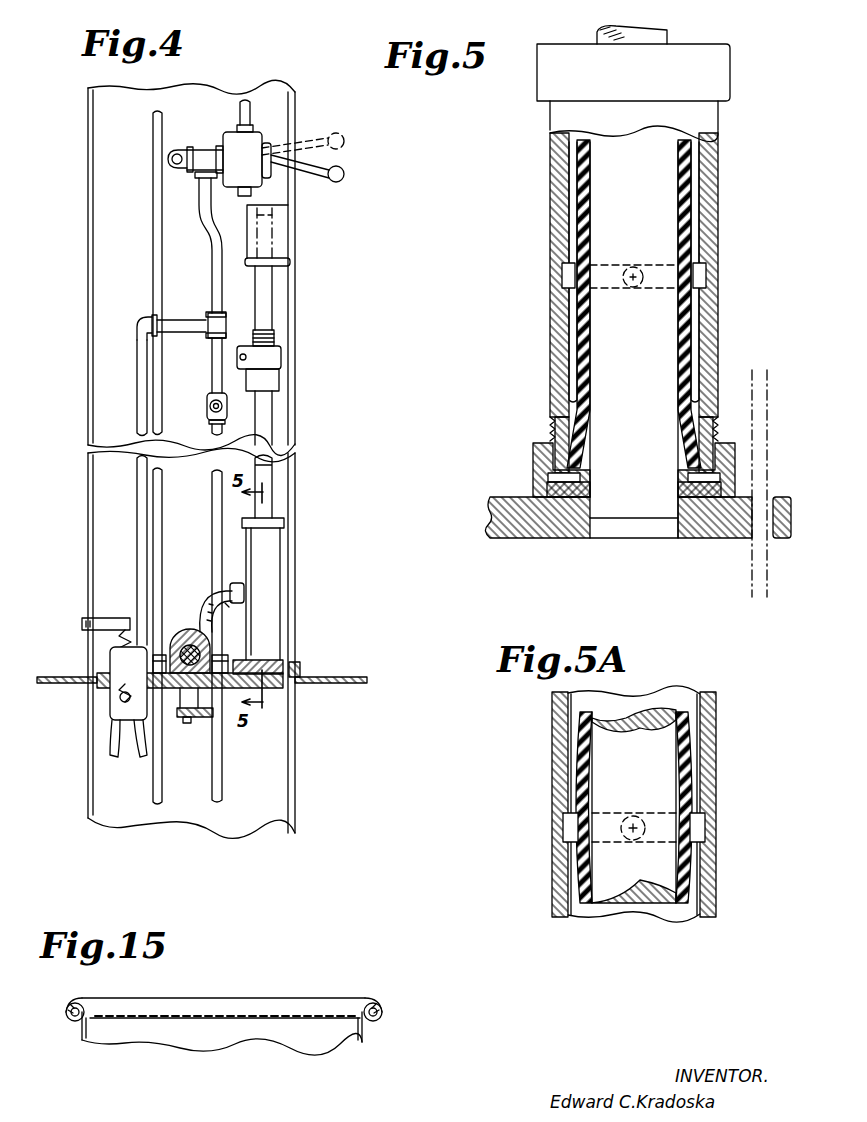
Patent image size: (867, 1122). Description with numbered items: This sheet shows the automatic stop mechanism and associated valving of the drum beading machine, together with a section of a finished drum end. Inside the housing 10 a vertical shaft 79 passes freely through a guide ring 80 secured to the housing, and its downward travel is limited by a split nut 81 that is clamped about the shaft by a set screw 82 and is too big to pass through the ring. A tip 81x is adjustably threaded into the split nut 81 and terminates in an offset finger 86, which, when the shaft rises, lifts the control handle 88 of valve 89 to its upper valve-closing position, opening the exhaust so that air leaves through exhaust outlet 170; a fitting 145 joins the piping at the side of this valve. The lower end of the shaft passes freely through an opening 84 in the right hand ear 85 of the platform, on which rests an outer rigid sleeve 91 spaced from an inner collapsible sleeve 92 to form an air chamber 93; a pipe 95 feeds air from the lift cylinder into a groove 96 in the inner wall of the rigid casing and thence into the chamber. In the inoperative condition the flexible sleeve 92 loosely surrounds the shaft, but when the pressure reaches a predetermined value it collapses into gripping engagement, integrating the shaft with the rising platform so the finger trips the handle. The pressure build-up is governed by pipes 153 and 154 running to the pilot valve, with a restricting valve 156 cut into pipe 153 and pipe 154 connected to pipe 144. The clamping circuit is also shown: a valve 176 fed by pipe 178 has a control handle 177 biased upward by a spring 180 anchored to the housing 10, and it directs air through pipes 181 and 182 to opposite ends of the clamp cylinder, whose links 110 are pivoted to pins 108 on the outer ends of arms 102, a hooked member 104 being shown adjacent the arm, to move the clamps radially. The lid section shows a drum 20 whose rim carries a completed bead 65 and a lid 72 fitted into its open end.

In FIG. 4, the housing 10 is at (113, 250).
In FIG. 5, the housing 10 is at (762, 418).
In FIG. 4, the pipe 144 is at (252, 116).
In FIG. 4, the pipe fitting 145 is at (223, 149).
In FIG. 4, the valve 89 is at (247, 160).
In FIG. 4, the control handle 88 is at (318, 140).
In FIG. 4, the exhaust outlet 170 is at (239, 190).
In FIG. 4, the offset finger 86 is at (288, 243).
In FIG. 4, the tip 81x is at (265, 298).
In FIG. 4, the set screw 82 is at (240, 357).
In FIG. 4, the split nut 81 is at (266, 357).
In FIG. 4, the guide ring 80 is at (268, 385).
In FIG. 4, the vertical shaft 79 is at (263, 413).
In FIG. 5, the vertical shaft 79 is at (667, 38).
In FIG. 5A, the vertical shaft 79 is at (634, 805).
In FIG. 4, the pipe 178 is at (142, 414).
In FIG. 4, the restricting valve 156 is at (207, 412).
In FIG. 4, the pipe 153 is at (211, 431).
In FIG. 4, the pipe 154 is at (155, 530).
In FIG. 4, the hook arm 104 is at (191, 628).
In FIG. 4, the arm 102 is at (174, 641).
In FIG. 4, the pipe 95 is at (228, 608).
In FIG. 5, the pipe 95 is at (633, 264).
In FIG. 5A, the pipe 95 is at (633, 816).
In FIG. 4, the spring 180 is at (122, 638).
In FIG. 4, the control handle 177 is at (120, 697).
In FIG. 4, the valve 176 is at (115, 705).
In FIG. 4, the pipe 181 is at (115, 740).
In FIG. 4, the pipe 182 is at (138, 757).
In FIG. 4, the pin 108 is at (182, 706).
In FIG. 4, the link 110 is at (199, 722).
In FIG. 5, the groove 96 is at (562, 277).
In FIG. 5A, the groove 96 is at (563, 829).
In FIG. 5, the outer rigid sleeve 91 is at (557, 313).
In FIG. 5A, the outer rigid sleeve 91 is at (558, 770).
In FIG. 5, the air chamber 93 is at (572, 347).
In FIG. 5A, the air chamber 93 is at (570, 792).
In FIG. 5, the inner collapsible sleeve 92 is at (578, 370).
In FIG. 5A, the inner collapsible sleeve 92 is at (580, 856).
In FIG. 5, the right hand ear 85 is at (524, 528).
In FIG. 5, the opening 84 is at (651, 530).
In FIG. 15, the lid 72 is at (215, 998).
In FIG. 15, the bead 65 is at (67, 1018).
In FIG. 15, the drum 20 is at (215, 1042).